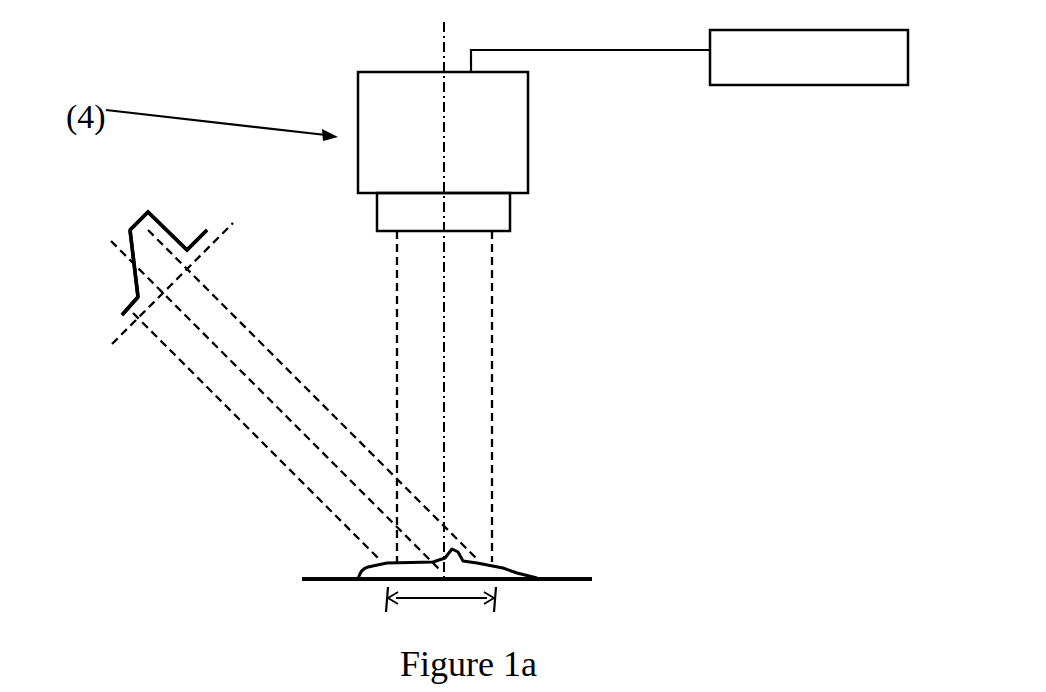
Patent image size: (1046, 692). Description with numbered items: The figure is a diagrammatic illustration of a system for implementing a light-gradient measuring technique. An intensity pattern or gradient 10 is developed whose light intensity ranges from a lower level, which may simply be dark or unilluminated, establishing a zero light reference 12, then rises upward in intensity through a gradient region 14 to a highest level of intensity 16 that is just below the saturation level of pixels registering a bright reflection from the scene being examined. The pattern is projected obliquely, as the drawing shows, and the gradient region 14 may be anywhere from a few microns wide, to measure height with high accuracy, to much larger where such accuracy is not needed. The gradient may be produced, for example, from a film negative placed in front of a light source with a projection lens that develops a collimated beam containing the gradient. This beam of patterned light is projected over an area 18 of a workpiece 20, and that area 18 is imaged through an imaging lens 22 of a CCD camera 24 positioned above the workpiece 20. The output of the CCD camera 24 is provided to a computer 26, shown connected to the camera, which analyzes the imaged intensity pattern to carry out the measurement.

The intensity pattern or gradient 10 is at (113, 317).
The zero light reference 12 is at (128, 303).
The gradient region 14 is at (120, 275).
The highest level of intensity 16 is at (137, 219).
The area 18 is at (441, 612).
The workpiece 20 is at (507, 565).
The imaging lens 22 is at (522, 226).
The CCD camera 24 is at (528, 147).
The computer 26 is at (762, 85).